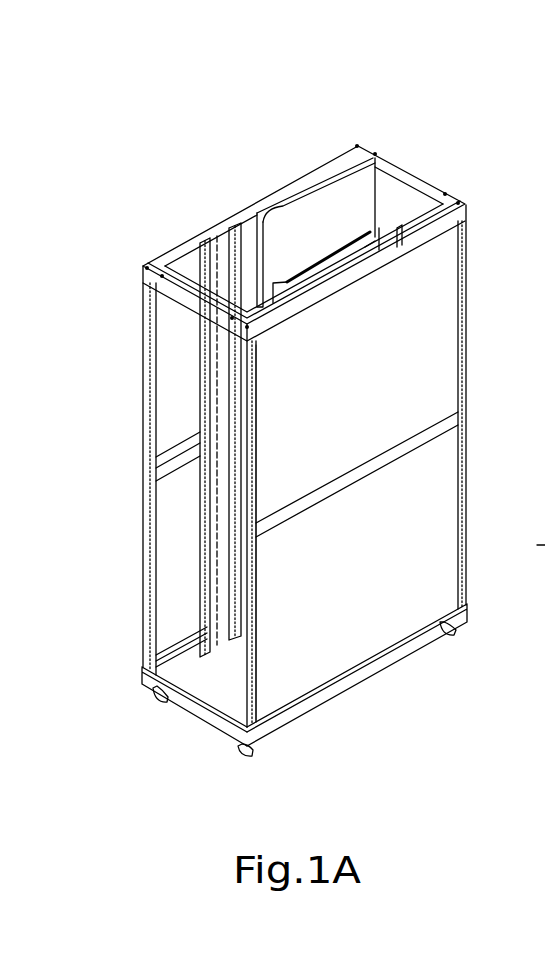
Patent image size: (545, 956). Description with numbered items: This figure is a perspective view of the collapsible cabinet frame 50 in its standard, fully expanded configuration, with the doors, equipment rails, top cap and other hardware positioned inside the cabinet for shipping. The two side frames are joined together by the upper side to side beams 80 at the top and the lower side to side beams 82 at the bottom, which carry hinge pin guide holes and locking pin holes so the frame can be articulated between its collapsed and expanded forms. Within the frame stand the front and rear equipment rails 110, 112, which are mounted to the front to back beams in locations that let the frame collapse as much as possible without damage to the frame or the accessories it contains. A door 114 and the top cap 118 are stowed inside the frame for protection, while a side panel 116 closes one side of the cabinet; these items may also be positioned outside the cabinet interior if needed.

The collapsible cabinet frame 50 is at (266, 108).
The upper side to side beam 80 is at (180, 283).
The lower side to side beam 82 is at (205, 708).
The front equipment rail 110 is at (203, 257).
The rear equipment rail 112 is at (233, 233).
The door 114 is at (357, 187).
The side panel 116 is at (415, 352).
The top cap 118 is at (397, 227).